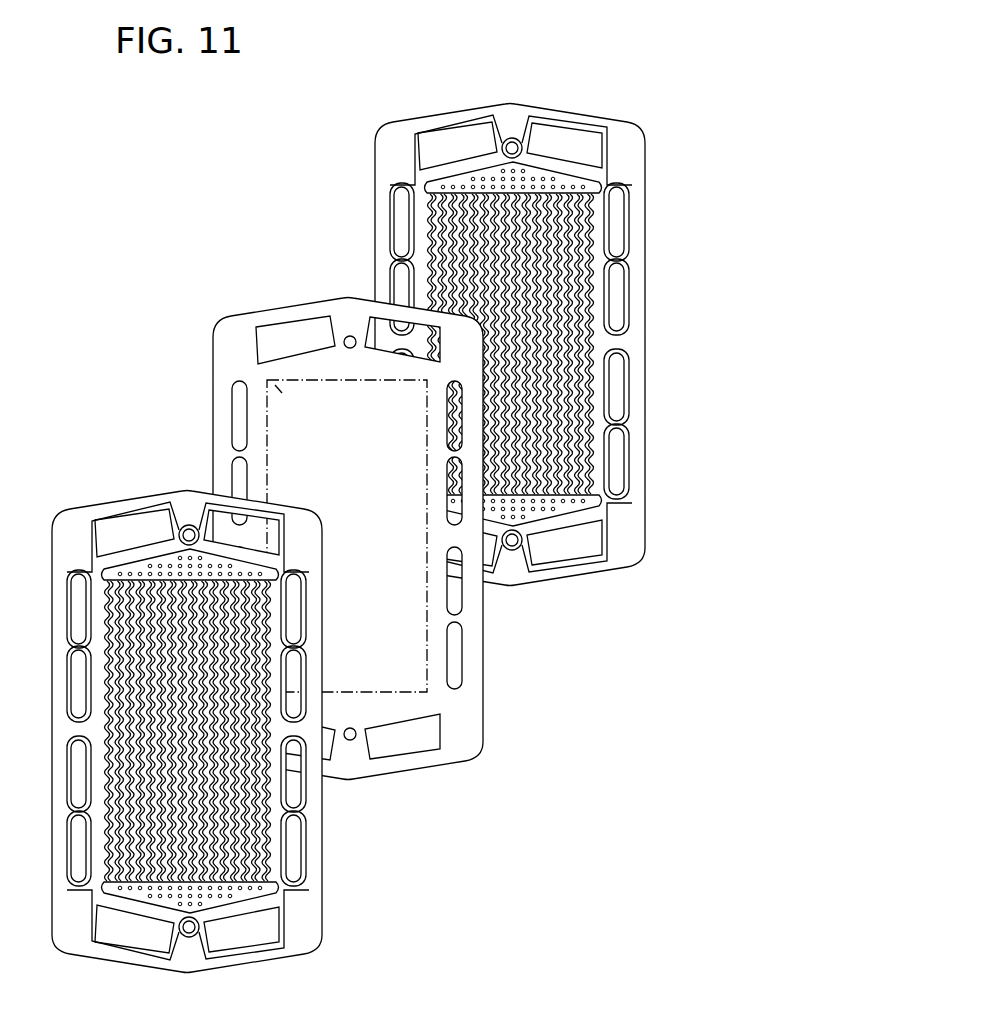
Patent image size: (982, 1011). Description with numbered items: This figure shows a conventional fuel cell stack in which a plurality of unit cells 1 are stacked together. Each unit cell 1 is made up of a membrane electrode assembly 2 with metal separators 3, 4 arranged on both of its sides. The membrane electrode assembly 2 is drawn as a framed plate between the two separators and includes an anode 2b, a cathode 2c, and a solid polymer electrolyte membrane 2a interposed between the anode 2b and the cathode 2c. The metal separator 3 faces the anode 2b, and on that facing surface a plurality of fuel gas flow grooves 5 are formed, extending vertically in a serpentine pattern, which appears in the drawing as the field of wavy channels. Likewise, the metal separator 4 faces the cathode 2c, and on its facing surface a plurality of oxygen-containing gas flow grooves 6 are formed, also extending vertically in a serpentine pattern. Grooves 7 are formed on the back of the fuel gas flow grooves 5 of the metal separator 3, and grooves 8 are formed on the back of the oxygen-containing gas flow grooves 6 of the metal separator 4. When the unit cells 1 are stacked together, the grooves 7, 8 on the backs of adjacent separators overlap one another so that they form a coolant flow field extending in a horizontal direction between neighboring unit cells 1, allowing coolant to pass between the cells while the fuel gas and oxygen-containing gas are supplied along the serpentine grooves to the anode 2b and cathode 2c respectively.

The unit cell 1 is at (234, 150).
The membrane electrode assembly 2 is at (326, 533).
The solid polymer electrolyte membrane 2a is at (233, 346).
The anode 2b is at (272, 378).
The cathode 2c is at (275, 412).
The metal separator 3 is at (505, 339).
The metal separator 4 is at (166, 719).
The fuel gas flow grooves 5 is at (556, 381).
The oxygen-containing gas flow grooves 6 is at (102, 768).
The grooves 7 is at (594, 286).
The grooves 8 is at (128, 858).